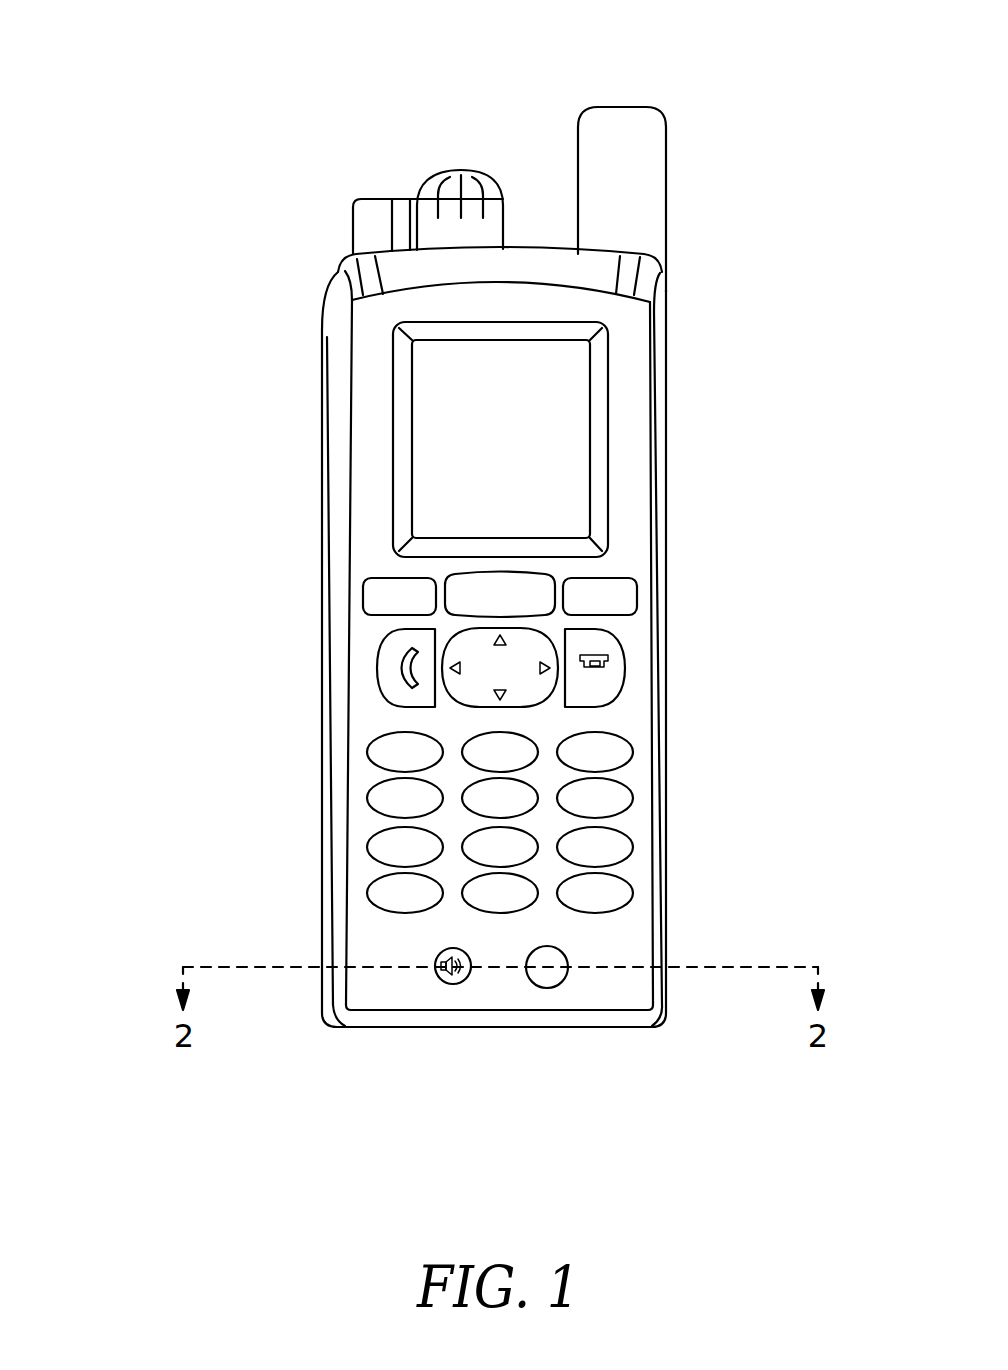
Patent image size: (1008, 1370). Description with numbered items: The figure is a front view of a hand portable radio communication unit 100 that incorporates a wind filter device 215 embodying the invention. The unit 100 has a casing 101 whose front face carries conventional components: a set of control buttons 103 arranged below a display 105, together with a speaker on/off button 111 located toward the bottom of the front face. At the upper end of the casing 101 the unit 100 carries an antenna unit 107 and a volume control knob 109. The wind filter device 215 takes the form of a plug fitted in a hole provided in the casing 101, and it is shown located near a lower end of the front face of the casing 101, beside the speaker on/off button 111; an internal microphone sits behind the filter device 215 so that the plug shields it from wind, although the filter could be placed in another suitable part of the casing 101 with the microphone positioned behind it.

The portable radio communication unit 100 is at (90, 25).
The casing 101 is at (397, 982).
The control buttons 103 is at (612, 593).
The display 105 is at (575, 450).
The antenna unit 107 is at (653, 193).
The volume control knob 109 is at (463, 174).
The speaker on/off button 111 is at (453, 985).
The wind filter device 215 is at (548, 989).